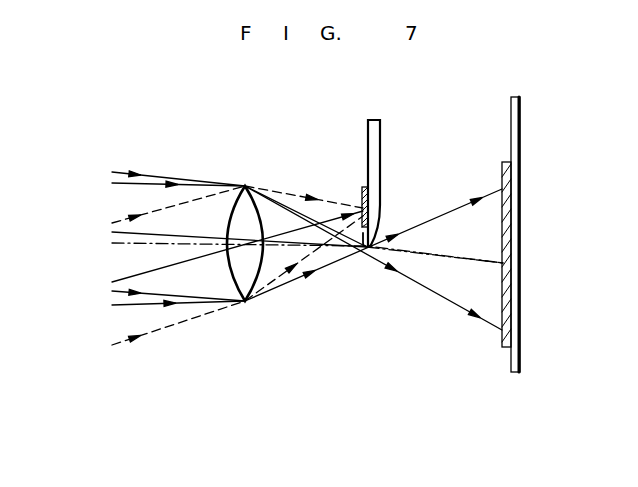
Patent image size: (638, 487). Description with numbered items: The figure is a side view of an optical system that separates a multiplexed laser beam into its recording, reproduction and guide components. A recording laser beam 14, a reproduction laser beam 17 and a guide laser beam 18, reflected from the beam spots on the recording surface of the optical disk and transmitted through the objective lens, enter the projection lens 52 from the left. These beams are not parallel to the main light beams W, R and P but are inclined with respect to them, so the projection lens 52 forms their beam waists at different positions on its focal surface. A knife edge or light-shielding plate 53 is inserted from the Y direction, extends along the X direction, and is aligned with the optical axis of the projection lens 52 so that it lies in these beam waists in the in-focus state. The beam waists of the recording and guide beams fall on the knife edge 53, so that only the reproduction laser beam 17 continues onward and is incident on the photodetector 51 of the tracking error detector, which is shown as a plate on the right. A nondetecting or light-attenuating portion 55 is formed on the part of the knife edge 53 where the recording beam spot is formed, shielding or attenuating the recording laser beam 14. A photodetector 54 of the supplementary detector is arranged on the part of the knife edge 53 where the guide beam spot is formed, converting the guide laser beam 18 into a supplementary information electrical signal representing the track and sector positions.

The recording laser beam 14 is at (127, 305).
The reproduction laser beam 17 is at (115, 292).
The guide laser beam 18 is at (180, 323).
The photodetector 51 is at (521, 127).
The projection lens 52 is at (227, 222).
The knife edge 53 is at (381, 125).
The photodetector 54 is at (362, 205).
The nondetecting portion 55 is at (371, 235).
The main light beam W is at (123, 243).
The main light beam P is at (172, 265).
The main light beam R is at (420, 256).